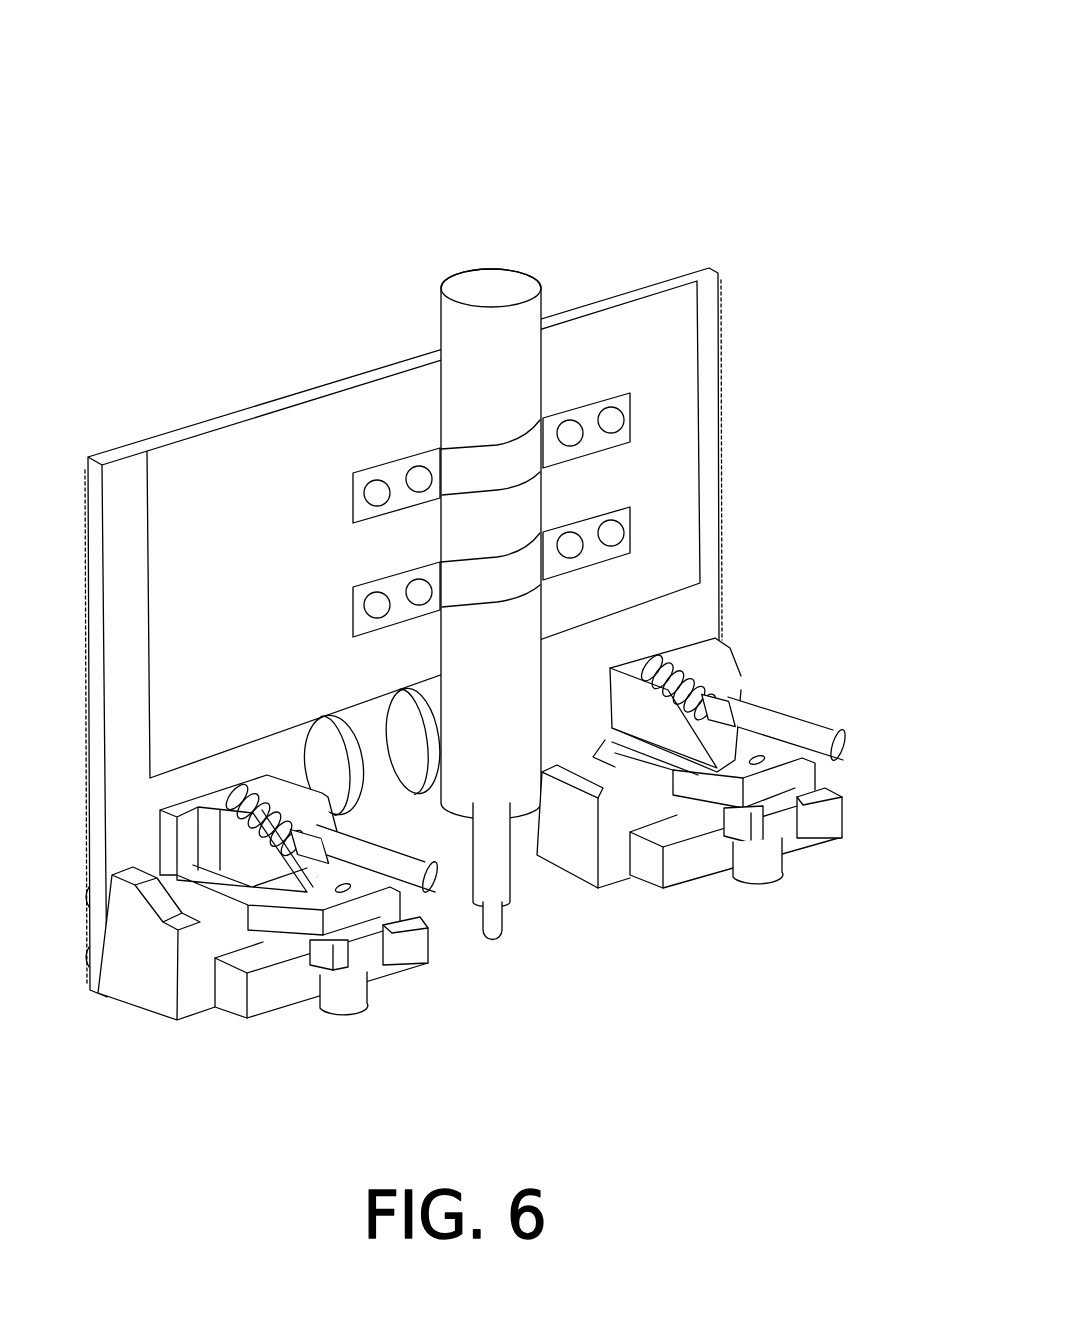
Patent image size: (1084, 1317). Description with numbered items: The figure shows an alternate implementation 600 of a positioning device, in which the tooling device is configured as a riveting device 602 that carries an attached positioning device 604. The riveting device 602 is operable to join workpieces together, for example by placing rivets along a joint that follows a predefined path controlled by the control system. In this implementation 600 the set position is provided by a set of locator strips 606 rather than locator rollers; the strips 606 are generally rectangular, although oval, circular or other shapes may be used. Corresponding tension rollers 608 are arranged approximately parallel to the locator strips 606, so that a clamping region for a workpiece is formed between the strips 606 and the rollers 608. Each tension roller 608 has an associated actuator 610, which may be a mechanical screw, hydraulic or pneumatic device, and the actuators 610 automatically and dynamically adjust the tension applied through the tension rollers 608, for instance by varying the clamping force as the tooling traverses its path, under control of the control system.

The implementation 600 is at (712, 66).
The riveting device 602 is at (492, 268).
The positioning device 604 is at (217, 387).
The locator strips 606 is at (663, 882).
The tension rollers 608 is at (765, 865).
The actuators 610 is at (778, 700).